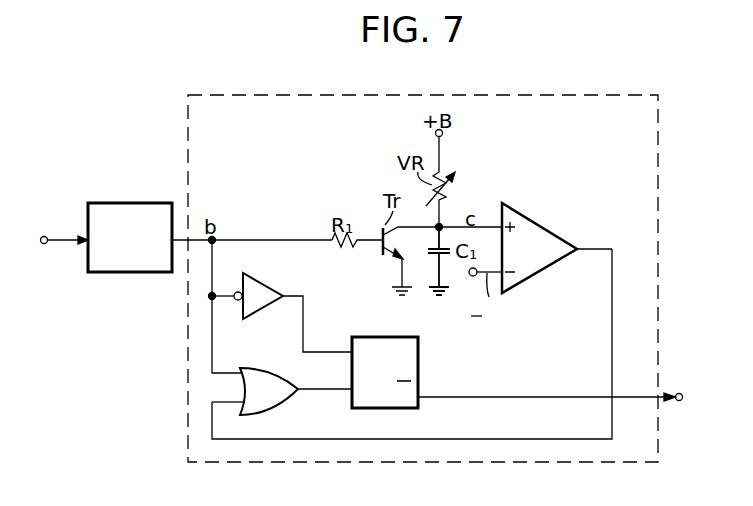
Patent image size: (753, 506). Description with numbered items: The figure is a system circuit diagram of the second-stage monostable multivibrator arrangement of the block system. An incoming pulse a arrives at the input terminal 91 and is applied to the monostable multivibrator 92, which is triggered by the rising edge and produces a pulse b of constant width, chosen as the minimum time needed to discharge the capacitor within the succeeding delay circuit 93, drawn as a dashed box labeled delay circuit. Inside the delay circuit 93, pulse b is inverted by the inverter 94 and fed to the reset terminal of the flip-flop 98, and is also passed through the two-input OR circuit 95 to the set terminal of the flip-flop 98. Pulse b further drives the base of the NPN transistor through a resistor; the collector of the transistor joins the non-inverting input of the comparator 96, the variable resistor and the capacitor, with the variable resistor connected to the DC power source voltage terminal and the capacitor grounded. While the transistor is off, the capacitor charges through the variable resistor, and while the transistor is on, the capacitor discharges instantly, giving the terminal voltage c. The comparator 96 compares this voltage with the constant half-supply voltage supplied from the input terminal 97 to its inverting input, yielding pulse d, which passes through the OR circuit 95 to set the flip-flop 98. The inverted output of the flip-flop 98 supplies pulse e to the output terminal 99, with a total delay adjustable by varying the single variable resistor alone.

The input terminal 91 is at (44, 236).
The monostable multivibrator 92 is at (120, 203).
The delay circuit 93 is at (357, 94).
The inverter 94 is at (273, 290).
The 2-input OR circuit 95 is at (262, 367).
The comparator 96 is at (549, 231).
The input terminal 97 is at (470, 277).
The flip-flop 98 is at (372, 337).
The output terminal 99 is at (681, 393).